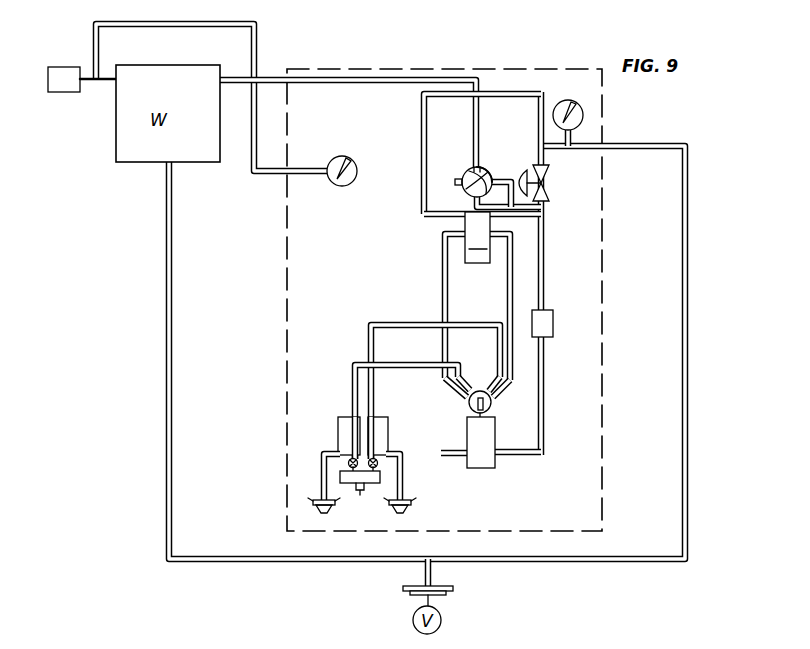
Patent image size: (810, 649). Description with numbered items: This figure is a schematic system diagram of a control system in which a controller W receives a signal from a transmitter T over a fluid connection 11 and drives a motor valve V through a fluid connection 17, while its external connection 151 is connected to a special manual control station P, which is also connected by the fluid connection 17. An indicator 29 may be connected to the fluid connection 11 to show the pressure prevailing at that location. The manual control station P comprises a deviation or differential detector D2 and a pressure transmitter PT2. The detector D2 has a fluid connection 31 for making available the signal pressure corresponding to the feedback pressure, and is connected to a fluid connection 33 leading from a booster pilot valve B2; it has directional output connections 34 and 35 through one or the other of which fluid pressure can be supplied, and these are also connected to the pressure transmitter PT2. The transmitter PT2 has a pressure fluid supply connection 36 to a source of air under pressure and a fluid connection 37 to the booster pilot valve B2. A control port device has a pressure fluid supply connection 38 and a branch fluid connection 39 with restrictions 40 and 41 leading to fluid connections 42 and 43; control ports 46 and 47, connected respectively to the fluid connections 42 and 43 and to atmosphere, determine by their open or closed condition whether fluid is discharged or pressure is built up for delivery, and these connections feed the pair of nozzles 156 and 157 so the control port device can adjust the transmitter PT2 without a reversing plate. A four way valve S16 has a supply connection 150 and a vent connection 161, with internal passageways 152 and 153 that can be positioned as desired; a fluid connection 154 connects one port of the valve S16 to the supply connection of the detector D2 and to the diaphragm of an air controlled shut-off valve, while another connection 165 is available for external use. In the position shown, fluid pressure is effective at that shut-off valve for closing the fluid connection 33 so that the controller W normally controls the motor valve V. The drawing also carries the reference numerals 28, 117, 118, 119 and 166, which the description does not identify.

The fluid connection 11 is at (104, 80).
The fluid connection 17 is at (238, 557).
The pressure gauge 28 is at (584, 113).
The indicator 29 is at (355, 148).
The fluid connection 31 is at (426, 219).
The fluid connection 33 is at (546, 240).
The directional output connection 34 is at (514, 268).
The directional output connection 35 is at (441, 263).
The pressure fluid supply connection 36 is at (457, 456).
The fluid connection 37 is at (543, 424).
The pressure fluid supply connection 38 is at (366, 491).
The branch fluid connection 39 is at (378, 477).
The restriction 40 is at (349, 466).
The restriction 41 is at (378, 462).
The fluid connection 42 is at (351, 398).
The fluid connection 43 is at (373, 396).
The control port 46 is at (325, 513).
The control port 47 is at (407, 508).
The nozzle 117 is at (494, 404).
The nozzle 118 is at (466, 402).
The mixing chamber 119 is at (482, 389).
The supply connection 150 is at (456, 187).
The external connection 151 is at (227, 76).
The internal valve passageway 152 is at (486, 165).
The internal valve passageway 153 is at (465, 191).
The fluid connection 154 is at (541, 205).
The nozzle 156 is at (458, 365).
The nozzle 157 is at (496, 372).
The vent connection 161 is at (488, 176).
The connection 165 is at (474, 163).
The conduit 166 is at (272, 176).
The four way valve S16 is at (465, 175).
The differential detector D2 is at (479, 237).
The booster pilot valve B2 is at (548, 318).
The pressure transmitter PT2 is at (486, 446).
The manual control station P is at (603, 377).